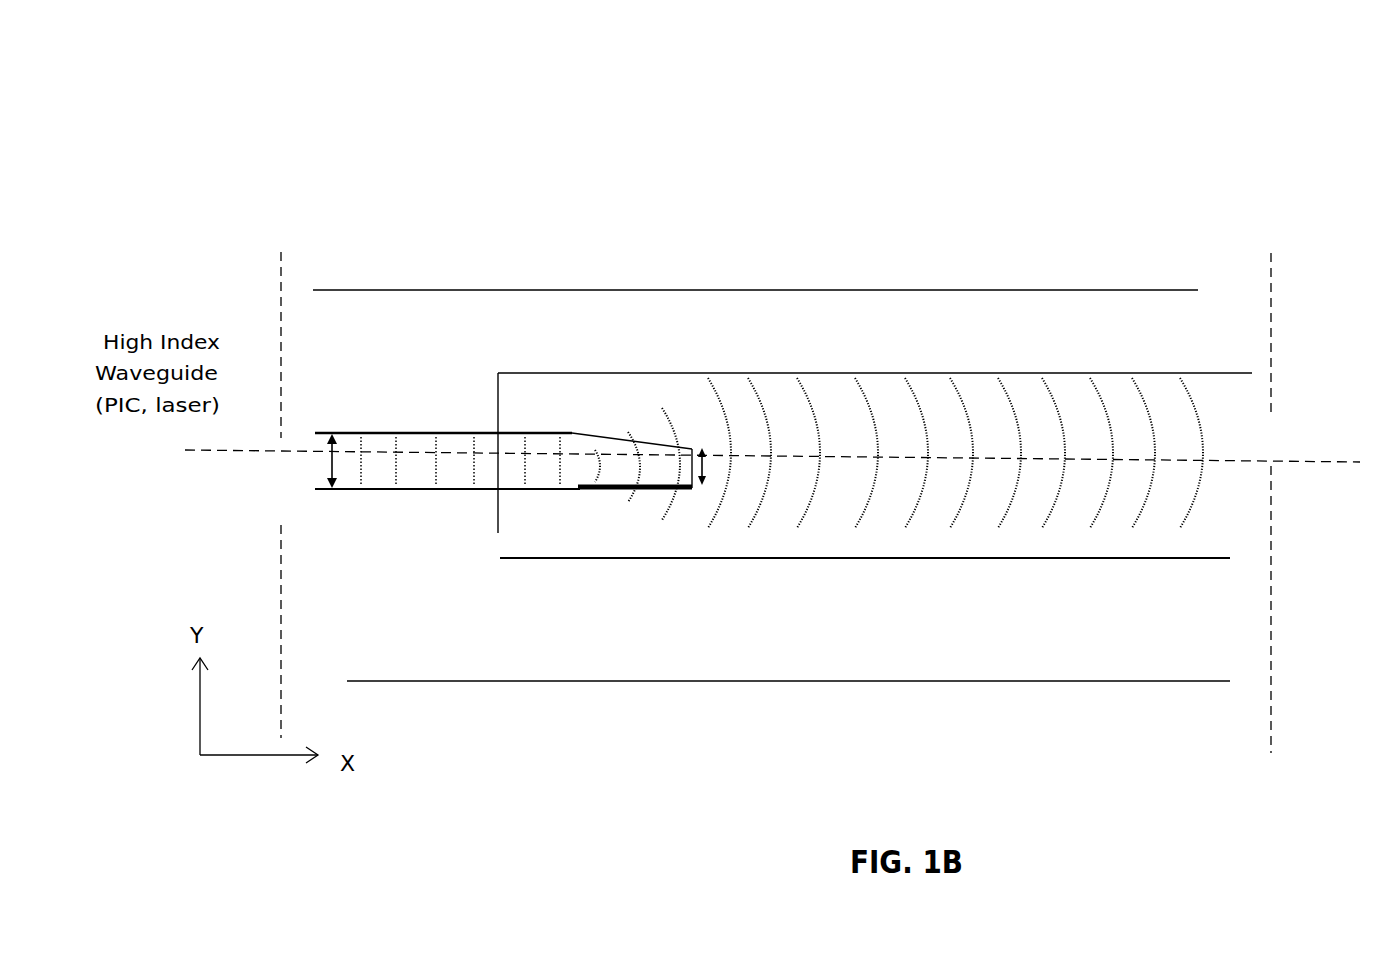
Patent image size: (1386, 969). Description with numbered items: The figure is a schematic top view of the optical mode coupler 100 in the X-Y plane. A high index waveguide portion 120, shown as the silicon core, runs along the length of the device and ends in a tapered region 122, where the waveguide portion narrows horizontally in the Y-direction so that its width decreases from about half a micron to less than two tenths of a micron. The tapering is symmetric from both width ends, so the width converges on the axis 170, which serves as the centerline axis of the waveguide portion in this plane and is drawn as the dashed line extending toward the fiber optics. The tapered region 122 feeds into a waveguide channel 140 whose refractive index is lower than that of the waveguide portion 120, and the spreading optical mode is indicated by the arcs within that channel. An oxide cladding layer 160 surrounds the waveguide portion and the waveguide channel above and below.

The optical mode coupler 100 is at (883, 211).
The waveguide portion 120 is at (410, 430).
The tapered region 122 is at (625, 478).
The waveguide channel 140 is at (692, 372).
The oxide cladding layer 160 is at (458, 660).
The axis 170 is at (1347, 469).